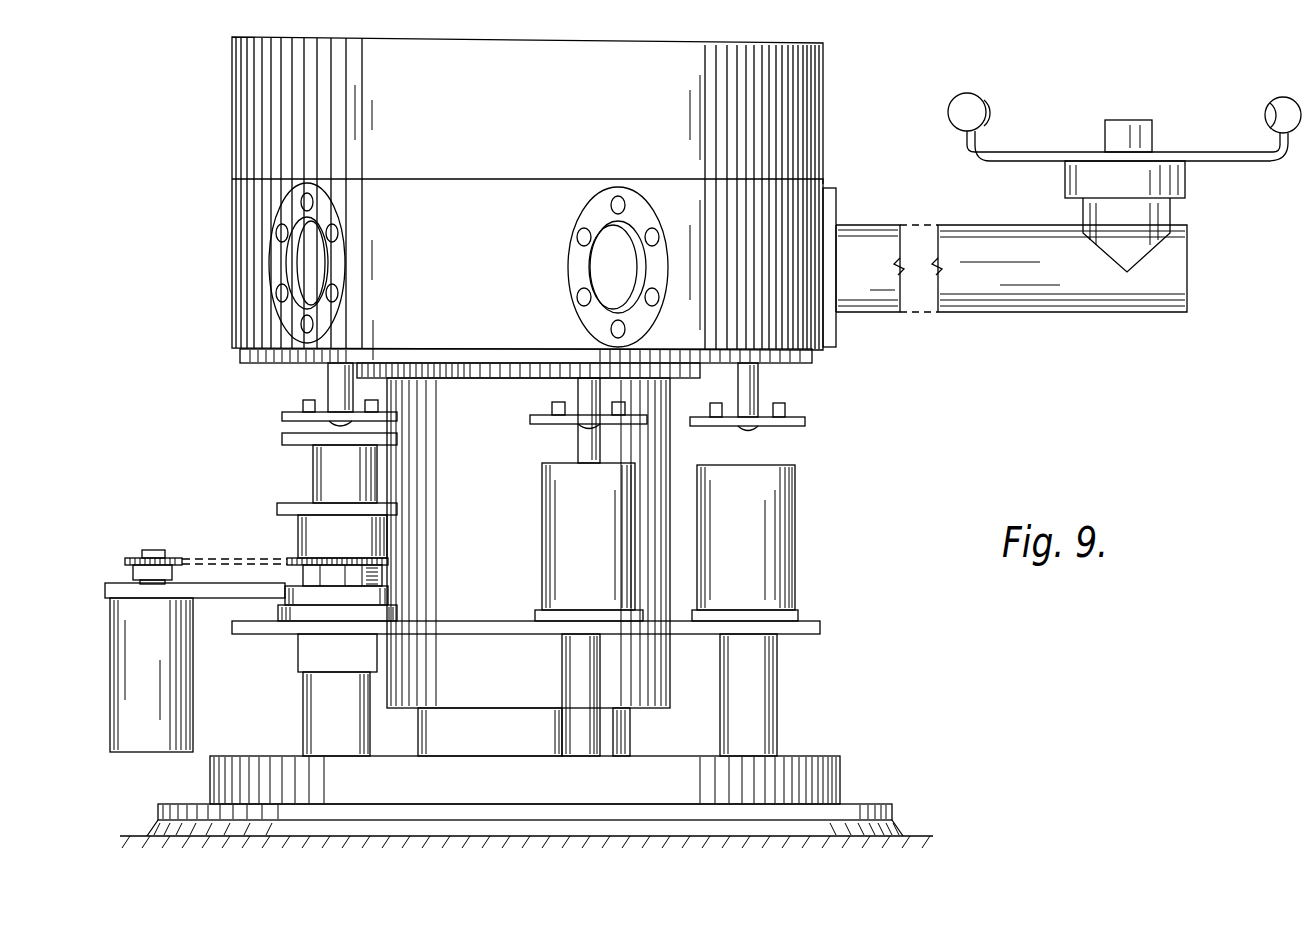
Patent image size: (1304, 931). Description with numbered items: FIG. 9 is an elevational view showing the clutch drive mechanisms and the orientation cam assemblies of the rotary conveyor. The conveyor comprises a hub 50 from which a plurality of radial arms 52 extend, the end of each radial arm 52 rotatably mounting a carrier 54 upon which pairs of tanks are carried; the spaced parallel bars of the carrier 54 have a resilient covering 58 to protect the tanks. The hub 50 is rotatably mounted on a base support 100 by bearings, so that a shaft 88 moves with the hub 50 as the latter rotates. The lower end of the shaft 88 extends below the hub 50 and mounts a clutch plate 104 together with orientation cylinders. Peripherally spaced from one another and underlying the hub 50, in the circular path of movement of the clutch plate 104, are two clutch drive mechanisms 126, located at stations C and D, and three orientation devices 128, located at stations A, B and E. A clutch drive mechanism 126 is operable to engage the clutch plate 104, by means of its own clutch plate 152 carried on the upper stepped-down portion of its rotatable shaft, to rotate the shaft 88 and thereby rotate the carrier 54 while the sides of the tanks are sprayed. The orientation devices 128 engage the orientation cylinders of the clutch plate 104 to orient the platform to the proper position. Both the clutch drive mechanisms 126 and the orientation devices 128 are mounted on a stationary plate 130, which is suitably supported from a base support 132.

The hub 50 is at (236, 138).
The radial arm 52 is at (1010, 314).
The carrier 54 is at (1107, 171).
The resilient covering 58 is at (950, 110).
The shaft 88 is at (328, 384).
The base support 100 is at (673, 460).
The clutch plate 104 is at (287, 426).
The clutch drive mechanism 126 is at (313, 478).
The orientation device 128 is at (542, 522).
The stationary plate 130 is at (820, 630).
The base support 132 is at (790, 757).
The clutch plate 152 is at (287, 437).